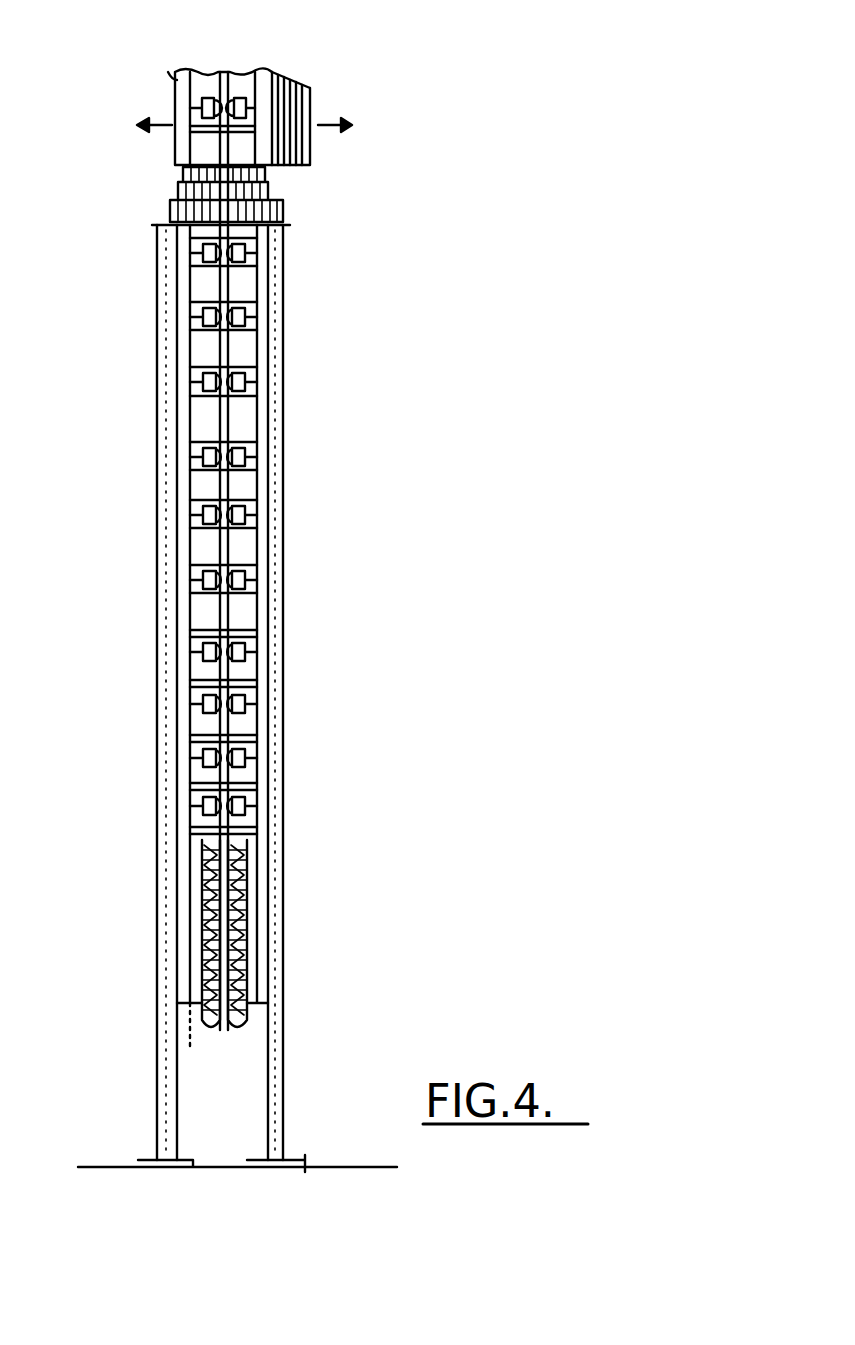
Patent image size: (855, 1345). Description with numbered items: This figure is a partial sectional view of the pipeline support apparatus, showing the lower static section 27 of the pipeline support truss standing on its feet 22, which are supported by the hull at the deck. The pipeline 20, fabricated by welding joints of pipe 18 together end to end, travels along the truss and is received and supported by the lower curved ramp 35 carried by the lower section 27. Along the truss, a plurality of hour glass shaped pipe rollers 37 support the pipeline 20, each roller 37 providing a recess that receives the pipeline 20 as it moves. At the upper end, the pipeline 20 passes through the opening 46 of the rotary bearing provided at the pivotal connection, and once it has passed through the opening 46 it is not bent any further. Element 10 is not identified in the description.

The shaft 10 is at (225, 80).
The joints of pipe 18 is at (172, 95).
The pipeline 20 is at (227, 280).
The feet 22 is at (267, 1173).
The lower static section 27 is at (283, 870).
The lower curved ramp 35 is at (188, 1030).
The pipe roller 37 is at (235, 455).
The opening 46 is at (268, 190).